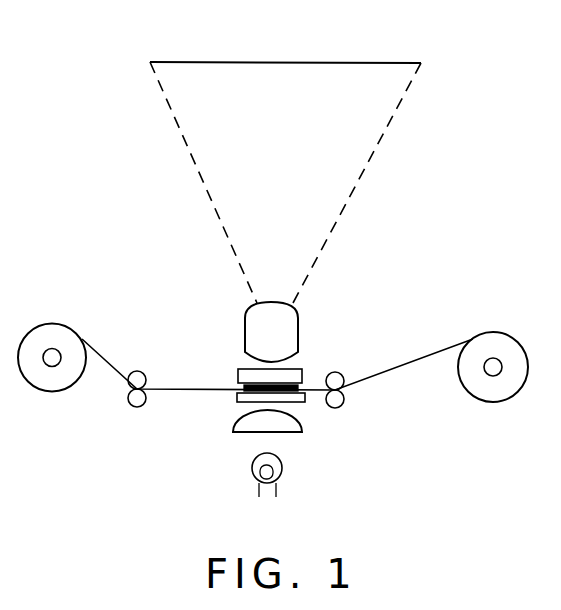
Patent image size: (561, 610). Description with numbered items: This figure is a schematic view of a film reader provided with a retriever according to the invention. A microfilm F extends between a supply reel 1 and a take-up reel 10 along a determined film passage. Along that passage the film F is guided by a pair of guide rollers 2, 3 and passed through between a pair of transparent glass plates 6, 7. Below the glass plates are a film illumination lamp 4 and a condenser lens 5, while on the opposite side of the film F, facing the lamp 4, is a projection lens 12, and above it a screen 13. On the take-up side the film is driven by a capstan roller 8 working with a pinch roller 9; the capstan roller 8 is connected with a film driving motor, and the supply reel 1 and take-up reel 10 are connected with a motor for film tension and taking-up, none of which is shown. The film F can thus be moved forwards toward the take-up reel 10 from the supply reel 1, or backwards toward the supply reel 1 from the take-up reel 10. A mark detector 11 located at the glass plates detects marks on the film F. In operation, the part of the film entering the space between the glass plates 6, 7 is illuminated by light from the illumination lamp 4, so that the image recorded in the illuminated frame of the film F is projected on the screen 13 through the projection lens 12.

The supply reel 1 is at (47, 391).
The guide roller 2 is at (133, 407).
The guide roller 3 is at (137, 370).
The film illumination lamp 4 is at (282, 469).
The condenser lens 5 is at (250, 425).
The transparent glass plate 6 is at (239, 398).
The transparent glass plate 7 is at (244, 387).
The capstan roller 8 is at (340, 406).
The pinch roller 9 is at (340, 373).
The take-up reel 10 is at (490, 403).
The mark detector 11 is at (243, 368).
The projection lens 12 is at (288, 318).
The screen 13 is at (361, 61).
The microfilm F is at (423, 352).